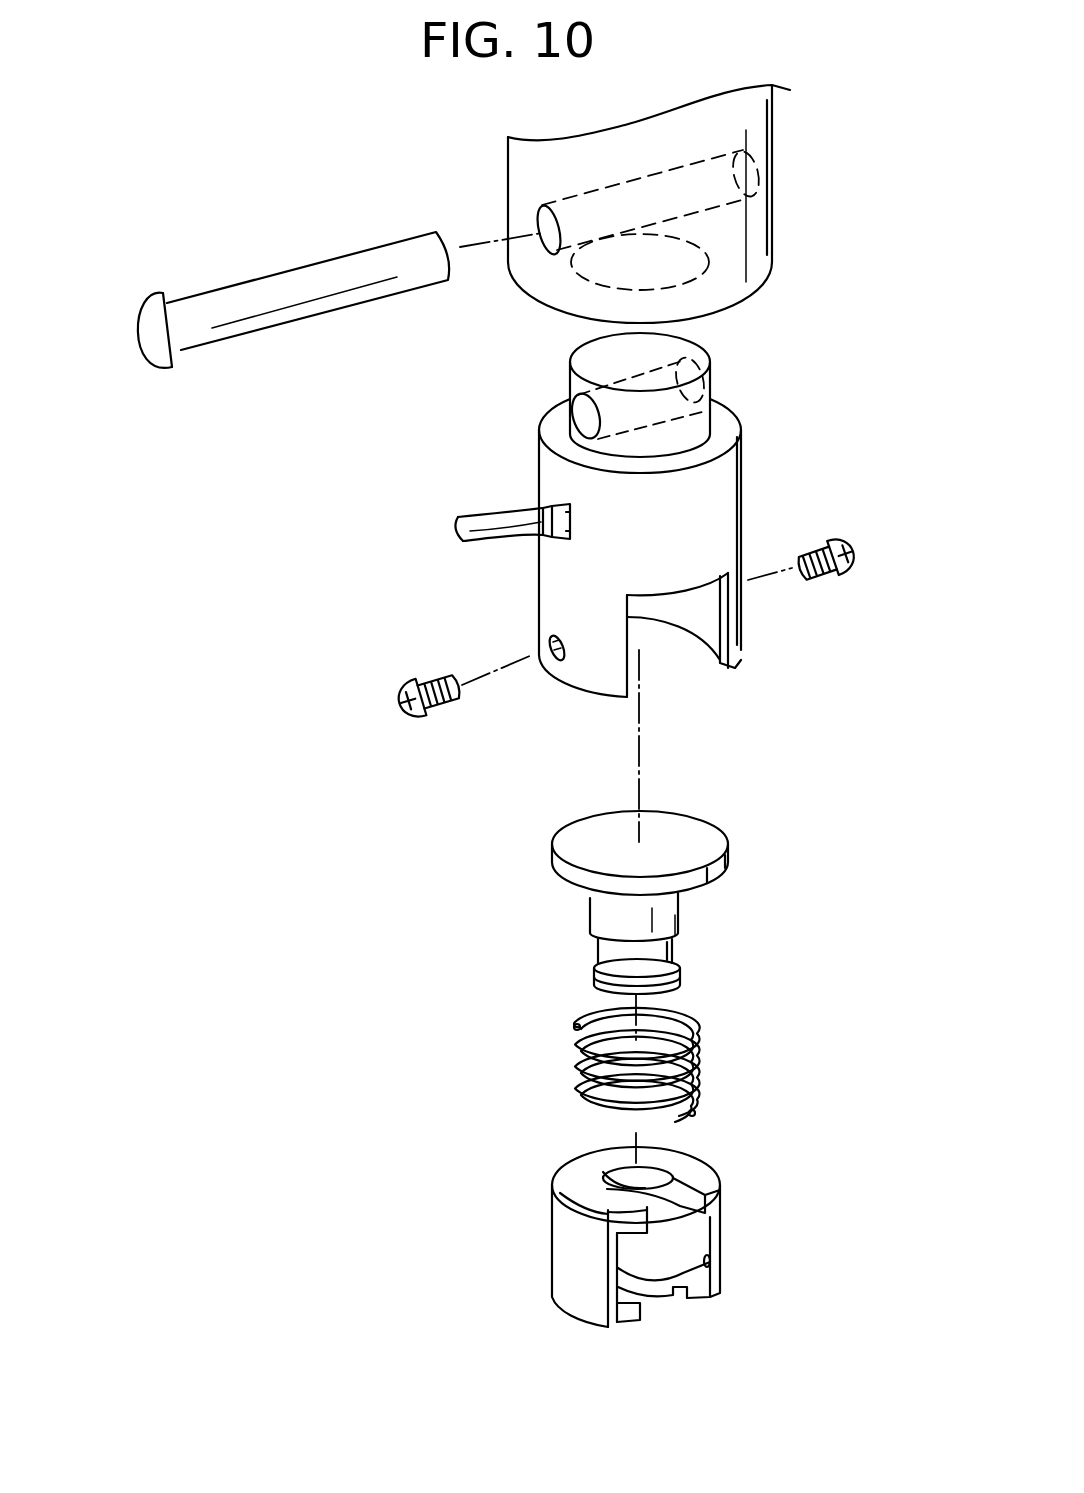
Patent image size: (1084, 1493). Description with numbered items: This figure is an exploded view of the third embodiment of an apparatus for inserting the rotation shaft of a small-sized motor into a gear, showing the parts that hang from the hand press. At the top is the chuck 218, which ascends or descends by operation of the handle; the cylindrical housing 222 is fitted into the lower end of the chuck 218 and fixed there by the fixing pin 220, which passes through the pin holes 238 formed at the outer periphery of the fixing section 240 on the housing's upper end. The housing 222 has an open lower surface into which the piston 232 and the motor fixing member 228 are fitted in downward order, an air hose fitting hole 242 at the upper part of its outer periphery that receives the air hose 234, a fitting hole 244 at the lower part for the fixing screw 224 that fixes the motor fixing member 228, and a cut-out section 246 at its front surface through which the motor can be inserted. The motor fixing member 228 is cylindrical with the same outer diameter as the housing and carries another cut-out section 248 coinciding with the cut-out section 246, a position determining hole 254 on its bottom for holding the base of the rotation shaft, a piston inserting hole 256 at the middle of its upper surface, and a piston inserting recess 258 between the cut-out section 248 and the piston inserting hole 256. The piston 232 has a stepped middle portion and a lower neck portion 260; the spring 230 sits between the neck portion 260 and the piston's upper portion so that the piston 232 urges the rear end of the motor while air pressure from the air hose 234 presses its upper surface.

The chuck 218 is at (757, 216).
The fixing pin 220 is at (262, 295).
The cylindrical housing 222 is at (745, 493).
The fixing screw 224 is at (398, 705).
The motor fixing member 228 is at (735, 1218).
The spring 230 is at (700, 1085).
The piston 232 is at (723, 862).
The air hose 234 is at (507, 518).
The pin holes 238 is at (568, 402).
The fixing section 240 is at (708, 388).
The air hose fitting hole 242 is at (538, 537).
The fitting hole 244 is at (553, 658).
The cut-out section 246 is at (740, 658).
The cut-out section 248 is at (708, 1262).
The position determining hole 254 is at (632, 1306).
The piston inserting hole 256 is at (640, 1200).
The piston inserting recess 258 is at (583, 1204).
The neck portion 260 is at (680, 972).